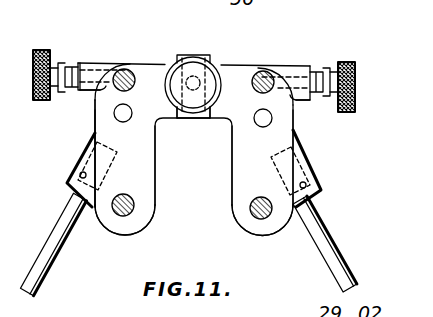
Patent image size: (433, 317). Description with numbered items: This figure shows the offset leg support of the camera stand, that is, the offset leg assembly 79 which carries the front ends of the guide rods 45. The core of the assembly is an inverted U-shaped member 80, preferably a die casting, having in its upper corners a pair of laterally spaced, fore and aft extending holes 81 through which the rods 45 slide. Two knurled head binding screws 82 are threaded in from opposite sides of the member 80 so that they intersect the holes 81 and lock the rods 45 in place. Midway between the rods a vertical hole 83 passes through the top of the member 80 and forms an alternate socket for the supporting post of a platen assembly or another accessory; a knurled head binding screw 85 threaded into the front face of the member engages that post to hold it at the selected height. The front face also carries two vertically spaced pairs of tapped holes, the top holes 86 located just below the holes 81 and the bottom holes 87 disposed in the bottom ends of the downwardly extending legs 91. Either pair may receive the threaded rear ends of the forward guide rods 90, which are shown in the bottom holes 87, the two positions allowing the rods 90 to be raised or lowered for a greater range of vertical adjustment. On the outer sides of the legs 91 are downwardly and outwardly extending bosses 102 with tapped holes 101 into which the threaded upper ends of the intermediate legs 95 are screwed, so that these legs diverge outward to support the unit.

The knurled head binding screw 82 is at (60, 62).
The offset leg assembly 79 is at (88, 62).
The guide rod 45 is at (118, 67).
The hole 81 is at (128, 76).
The inverted U-shaped member 80 is at (152, 78).
The vertical hole 83 is at (205, 70).
The top hole 86 is at (120, 112).
The knurled head binding screw 85 is at (178, 116).
The leg 91 is at (140, 188).
The bottom hole 87 is at (117, 218).
The forward guide rod 90 is at (132, 213).
The boss 102 is at (78, 162).
The tapped hole 101 is at (80, 177).
The intermediate leg 95 is at (53, 230).